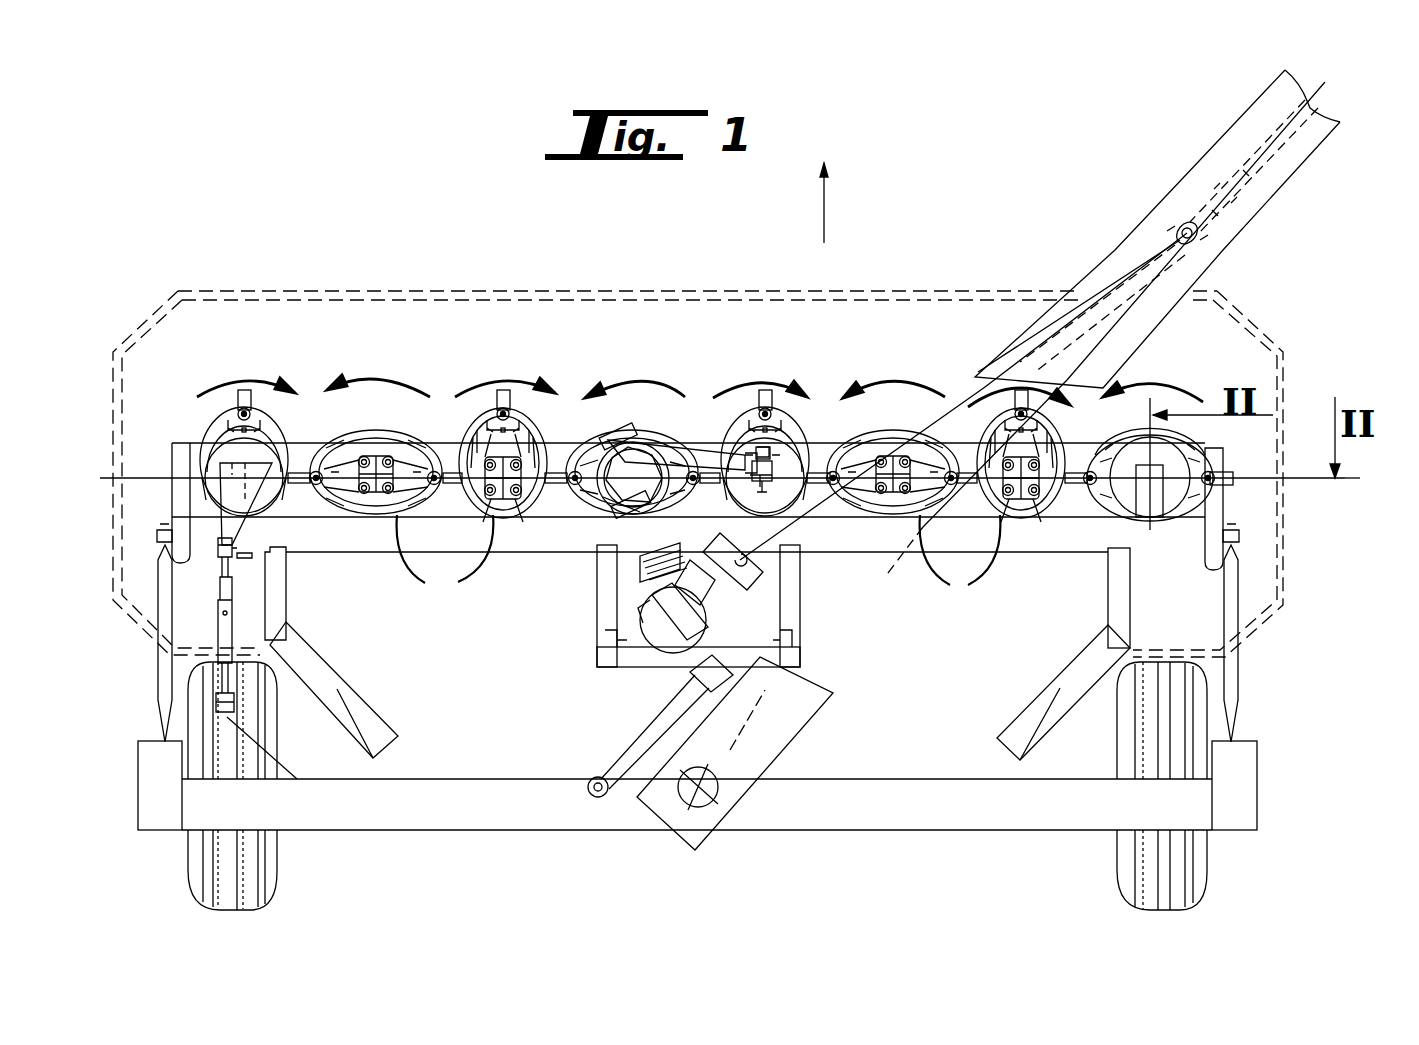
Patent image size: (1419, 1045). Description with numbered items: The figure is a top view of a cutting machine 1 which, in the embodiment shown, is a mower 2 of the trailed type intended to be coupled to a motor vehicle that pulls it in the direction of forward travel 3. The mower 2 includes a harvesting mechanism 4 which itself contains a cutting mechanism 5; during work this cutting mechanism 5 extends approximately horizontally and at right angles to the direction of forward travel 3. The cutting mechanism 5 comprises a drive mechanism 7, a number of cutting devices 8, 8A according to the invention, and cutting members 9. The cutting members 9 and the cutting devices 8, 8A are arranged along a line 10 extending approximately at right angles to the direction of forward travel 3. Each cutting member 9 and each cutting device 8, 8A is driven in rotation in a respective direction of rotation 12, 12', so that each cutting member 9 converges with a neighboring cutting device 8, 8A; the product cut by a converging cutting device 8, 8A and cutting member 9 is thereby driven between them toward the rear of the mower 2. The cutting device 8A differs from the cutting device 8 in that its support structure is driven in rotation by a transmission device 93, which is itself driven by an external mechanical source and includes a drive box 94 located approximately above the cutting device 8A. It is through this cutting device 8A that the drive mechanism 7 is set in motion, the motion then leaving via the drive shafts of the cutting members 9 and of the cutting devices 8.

The cutting machine 1 is at (442, 830).
The mower 2 is at (433, 290).
The direction of forward travel 3 is at (826, 210).
The harvesting mechanism 4 is at (1223, 458).
The cutting mechanism 5 is at (187, 457).
The drive mechanism 7 is at (300, 457).
The cutting device 8 is at (212, 443).
The cutting device 8A is at (585, 445).
The cutting member 9 is at (699, 562).
The line 10 is at (1365, 481).
The direction of rotation 12 is at (633, 418).
The direction of rotation 12' is at (759, 421).
The transmission device 93 is at (607, 510).
The drive box 94 is at (648, 467).